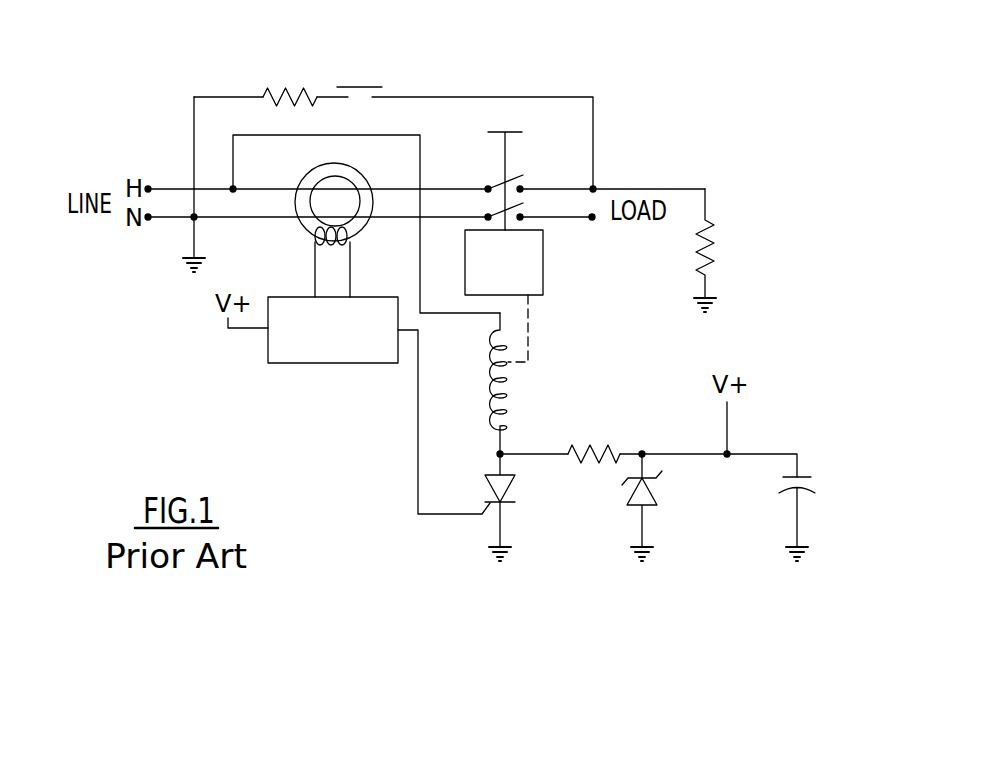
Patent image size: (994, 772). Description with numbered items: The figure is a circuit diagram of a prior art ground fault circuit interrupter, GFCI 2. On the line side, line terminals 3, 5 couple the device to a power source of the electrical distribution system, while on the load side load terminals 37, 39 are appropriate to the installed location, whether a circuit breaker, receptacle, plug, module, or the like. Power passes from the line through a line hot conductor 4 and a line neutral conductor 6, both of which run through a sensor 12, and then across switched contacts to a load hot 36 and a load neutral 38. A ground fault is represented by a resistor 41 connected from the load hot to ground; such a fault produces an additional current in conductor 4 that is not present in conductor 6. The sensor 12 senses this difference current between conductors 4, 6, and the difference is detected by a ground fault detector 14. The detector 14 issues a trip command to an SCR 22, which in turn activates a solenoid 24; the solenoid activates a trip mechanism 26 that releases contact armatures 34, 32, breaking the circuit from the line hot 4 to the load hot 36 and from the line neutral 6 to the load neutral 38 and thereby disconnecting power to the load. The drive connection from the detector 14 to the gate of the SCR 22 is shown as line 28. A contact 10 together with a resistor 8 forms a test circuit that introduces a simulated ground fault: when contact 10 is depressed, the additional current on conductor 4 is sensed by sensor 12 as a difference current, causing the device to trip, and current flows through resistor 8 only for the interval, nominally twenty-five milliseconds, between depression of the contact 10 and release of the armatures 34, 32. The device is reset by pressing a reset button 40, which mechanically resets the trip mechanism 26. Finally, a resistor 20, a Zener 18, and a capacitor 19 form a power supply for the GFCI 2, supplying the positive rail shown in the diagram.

The GFCI 2 is at (441, 45).
The line terminal 3 is at (148, 184).
The line hot conductor 4 is at (177, 186).
The line terminal 5 is at (148, 222).
The line neutral conductor 6 is at (175, 221).
The resistor 8 is at (283, 92).
The contact 10 is at (362, 86).
The sensor 12 is at (300, 235).
The ground fault detector 14 is at (268, 350).
The Zener 18 is at (656, 492).
The capacitor 19 is at (805, 477).
The resistor 20 is at (600, 446).
The SCR 22 is at (515, 490).
The solenoid 24 is at (509, 396).
The trip mechanism 26 is at (545, 281).
The gate drive line 28 is at (450, 514).
The contact armature 32 is at (523, 176).
The contact armature 34 is at (488, 213).
The load hot 36 is at (523, 186).
The load terminal 37 is at (593, 187).
The load neutral 38 is at (556, 219).
The load terminal 39 is at (594, 220).
The reset button 40 is at (490, 131).
The resistor 41 is at (716, 245).